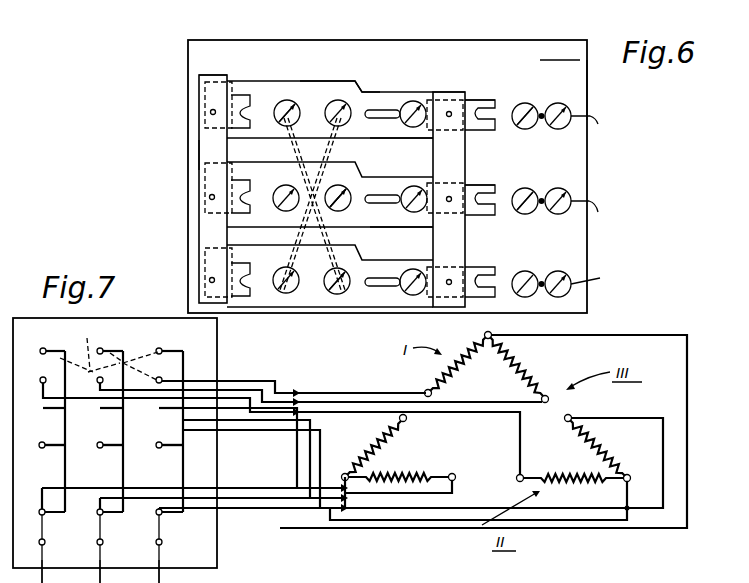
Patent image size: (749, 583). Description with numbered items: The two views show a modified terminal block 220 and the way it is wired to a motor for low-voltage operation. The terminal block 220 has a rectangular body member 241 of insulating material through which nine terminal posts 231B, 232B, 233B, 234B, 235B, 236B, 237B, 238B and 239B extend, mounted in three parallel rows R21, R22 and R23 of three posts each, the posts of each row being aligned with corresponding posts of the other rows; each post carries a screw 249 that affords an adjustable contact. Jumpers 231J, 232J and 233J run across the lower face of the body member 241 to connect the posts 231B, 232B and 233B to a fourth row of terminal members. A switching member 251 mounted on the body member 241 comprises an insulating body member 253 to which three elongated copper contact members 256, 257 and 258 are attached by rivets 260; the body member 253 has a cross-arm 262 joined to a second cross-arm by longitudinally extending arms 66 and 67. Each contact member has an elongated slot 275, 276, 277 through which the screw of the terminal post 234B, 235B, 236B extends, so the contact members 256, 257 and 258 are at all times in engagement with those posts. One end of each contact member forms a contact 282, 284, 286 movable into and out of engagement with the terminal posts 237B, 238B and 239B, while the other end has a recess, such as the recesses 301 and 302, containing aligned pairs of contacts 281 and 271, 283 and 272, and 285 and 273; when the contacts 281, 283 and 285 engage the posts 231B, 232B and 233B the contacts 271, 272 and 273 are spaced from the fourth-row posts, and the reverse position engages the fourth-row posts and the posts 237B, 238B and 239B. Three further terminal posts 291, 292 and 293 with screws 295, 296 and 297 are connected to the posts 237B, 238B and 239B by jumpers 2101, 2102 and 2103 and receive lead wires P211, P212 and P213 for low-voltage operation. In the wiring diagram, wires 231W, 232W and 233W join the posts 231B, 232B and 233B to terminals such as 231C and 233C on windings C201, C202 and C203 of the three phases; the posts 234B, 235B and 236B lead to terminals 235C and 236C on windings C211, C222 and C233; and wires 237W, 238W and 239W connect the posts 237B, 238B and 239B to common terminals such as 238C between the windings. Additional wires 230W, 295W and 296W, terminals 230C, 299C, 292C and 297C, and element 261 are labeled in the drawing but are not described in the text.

In FIG. 6, the terminal block 220 is at (596, 61).
In FIG. 7, the terminal block 220 is at (219, 333).
In FIG. 6, the switching member 251 is at (211, 69).
In FIG. 6, the body member 253 is at (199, 155).
In FIG. 6, the cross-arm 262 is at (213, 75).
In FIG. 6, the rivets 260 is at (210, 110).
In FIG. 6, the center terminal column 261 is at (441, 92).
In FIG. 6, the row of terminal posts R21 is at (273, 41).
In FIG. 6, the row of terminal posts R22 is at (422, 40).
In FIG. 6, the row of terminal posts R23 is at (550, 39).
In FIG. 6, the recess 302 is at (323, 62).
In FIG. 6, the contact 273 is at (249, 130).
In FIG. 6, the contact 272 is at (242, 215).
In FIG. 6, the contact 271 is at (243, 295).
In FIG. 6, the contact 285 is at (305, 119).
In FIG. 6, the terminal post 233B is at (341, 101).
In FIG. 7, the terminal post 233B is at (95, 319).
In FIG. 6, the terminal post 231B is at (276, 103).
In FIG. 7, the terminal post 231B is at (160, 348).
In FIG. 6, the terminal post 232B is at (289, 294).
In FIG. 7, the terminal post 232B is at (70, 318).
In FIG. 6, the terminal post 234B is at (432, 302).
In FIG. 7, the terminal post 234B is at (43, 454).
In FIG. 6, the terminal post 235B is at (447, 183).
In FIG. 7, the terminal post 235B is at (101, 454).
In FIG. 6, the terminal post 236B is at (415, 101).
In FIG. 7, the terminal post 236B is at (159, 454).
In FIG. 6, the terminal post 237B is at (515, 279).
In FIG. 7, the terminal post 237B is at (45, 515).
In FIG. 6, the terminal post 238B is at (516, 194).
In FIG. 7, the terminal post 238B is at (103, 515).
In FIG. 6, the terminal post 239B is at (528, 106).
In FIG. 7, the terminal post 239B is at (162, 515).
In FIG. 6, the elongated slot 277 is at (387, 106).
In FIG. 6, the elongated slot 276 is at (405, 189).
In FIG. 6, the elongated slot 275 is at (392, 273).
In FIG. 6, the longitudinally extending arm 66 is at (404, 148).
In FIG. 6, the longitudinally extending arm 67 is at (404, 233).
In FIG. 6, the contact member 258 is at (493, 99).
In FIG. 7, the contact member 258 is at (177, 466).
In FIG. 6, the contact member 257 is at (470, 178).
In FIG. 7, the contact member 257 is at (119, 466).
In FIG. 6, the contact member 256 is at (373, 294).
In FIG. 7, the contact member 256 is at (62, 466).
In FIG. 6, the contact 286 is at (492, 103).
In FIG. 6, the contact 284 is at (482, 186).
In FIG. 6, the contact 282 is at (483, 276).
In FIG. 6, the screw 249 is at (522, 110).
In FIG. 6, the screw 297 is at (558, 103).
In FIG. 6, the screw 296 is at (556, 188).
In FIG. 6, the screw 295 is at (551, 277).
In FIG. 6, the jumper 2103 is at (539, 126).
In FIG. 7, the jumper 2103 is at (162, 533).
In FIG. 6, the jumper 2102 is at (542, 212).
In FIG. 7, the jumper 2102 is at (102, 531).
In FIG. 6, the jumper 2101 is at (538, 289).
In FIG. 7, the jumper 2101 is at (44, 530).
In FIG. 6, the terminal post 293 is at (600, 126).
In FIG. 7, the terminal post 293 is at (162, 548).
In FIG. 6, the terminal post 292 is at (600, 210).
In FIG. 7, the terminal post 292 is at (103, 546).
In FIG. 6, the terminal post 291 is at (599, 278).
In FIG. 7, the terminal post 291 is at (45, 546).
In FIG. 6, the body member 241 is at (588, 89).
In FIG. 6, the recess 301 is at (333, 186).
In FIG. 6, the contact 283 is at (333, 213).
In FIG. 6, the contact 281 is at (329, 294).
In FIG. 7, the jumper 231J is at (92, 348).
In FIG. 7, the jumper 232J is at (55, 363).
In FIG. 7, the jumper 233J is at (134, 353).
In FIG. 7, the wire 231W is at (312, 390).
In FIG. 7, the wire 232W is at (366, 377).
In FIG. 7, the wire 233W is at (421, 383).
In FIG. 7, the wire 230W is at (283, 470).
In FIG. 7, the wire 295W is at (224, 461).
In FIG. 7, the wire 296W is at (411, 465).
In FIG. 7, the wire 237W is at (279, 528).
In FIG. 7, the wire 238W is at (279, 530).
In FIG. 7, the wire 239W is at (341, 529).
In FIG. 7, the lead wire P211 is at (41, 577).
In FIG. 7, the lead wire P212 is at (99, 577).
In FIG. 7, the lead wire P213 is at (158, 577).
In FIG. 7, the terminal 230C is at (430, 389).
In FIG. 7, the winding C211 is at (458, 359).
In FIG. 7, the terminal 299C is at (491, 333).
In FIG. 7, the winding C203 is at (522, 358).
In FIG. 7, the terminal 233C is at (547, 395).
In FIG. 7, the terminal 236C is at (570, 414).
In FIG. 7, the winding C233 is at (598, 447).
In FIG. 7, the terminal 238C is at (625, 474).
In FIG. 7, the terminal 292C is at (524, 474).
In FIG. 7, the winding C202 is at (558, 484).
In FIG. 7, the terminal 297C is at (345, 473).
In FIG. 7, the winding C201 is at (372, 445).
In FIG. 7, the terminal 231C is at (406, 420).
In FIG. 7, the winding C222 is at (410, 472).
In FIG. 7, the terminal 235C is at (453, 473).